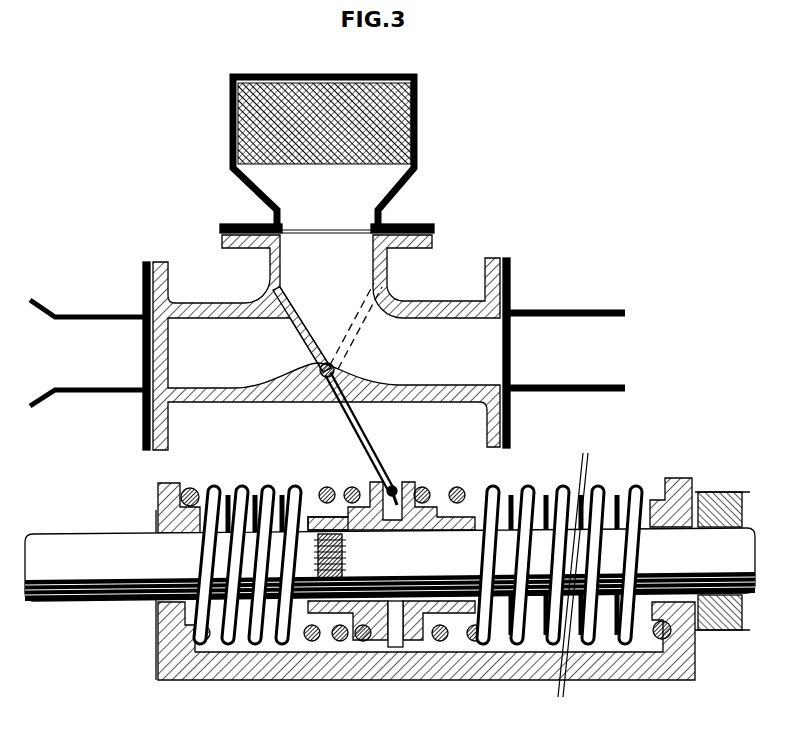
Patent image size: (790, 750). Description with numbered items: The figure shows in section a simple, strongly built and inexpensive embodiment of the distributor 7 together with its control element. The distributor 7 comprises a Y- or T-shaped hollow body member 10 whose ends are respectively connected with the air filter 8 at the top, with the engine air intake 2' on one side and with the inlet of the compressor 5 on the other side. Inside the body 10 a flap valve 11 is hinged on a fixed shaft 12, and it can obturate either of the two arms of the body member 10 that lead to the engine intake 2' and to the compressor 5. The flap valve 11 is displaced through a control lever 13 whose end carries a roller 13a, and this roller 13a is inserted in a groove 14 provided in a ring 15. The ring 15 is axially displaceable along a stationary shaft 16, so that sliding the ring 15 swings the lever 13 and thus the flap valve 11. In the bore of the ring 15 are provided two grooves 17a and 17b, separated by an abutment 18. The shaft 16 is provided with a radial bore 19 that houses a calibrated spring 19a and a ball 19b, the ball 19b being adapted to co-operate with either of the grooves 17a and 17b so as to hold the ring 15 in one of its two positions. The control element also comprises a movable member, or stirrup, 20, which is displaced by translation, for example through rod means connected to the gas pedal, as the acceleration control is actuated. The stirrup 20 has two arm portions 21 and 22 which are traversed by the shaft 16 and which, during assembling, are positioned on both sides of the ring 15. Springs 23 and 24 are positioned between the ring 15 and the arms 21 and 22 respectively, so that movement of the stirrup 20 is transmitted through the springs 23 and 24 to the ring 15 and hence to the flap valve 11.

The engine air intake 2' is at (569, 319).
The compressor 5 is at (38, 297).
The distributor 7 is at (445, 260).
The air filter 8 is at (418, 133).
The hollow body member 10 is at (183, 302).
The flap valve 11 is at (297, 330).
The fixed shaft 12 is at (326, 386).
The control lever 13 is at (360, 421).
The roller 13a is at (397, 504).
The groove 14 is at (373, 485).
The ring 15 is at (425, 612).
The stationary shaft 16 is at (85, 538).
The groove 17a is at (328, 617).
The groove 17b is at (473, 635).
The abutment 18 is at (395, 602).
The radial bore 19 is at (342, 563).
The calibrated spring 19a is at (342, 547).
The ball 19b is at (313, 523).
The stirrup 20 is at (575, 670).
The arm portion 21 is at (690, 478).
The arm portion 22 is at (158, 512).
The spring 23 is at (636, 487).
The spring 24 is at (240, 493).